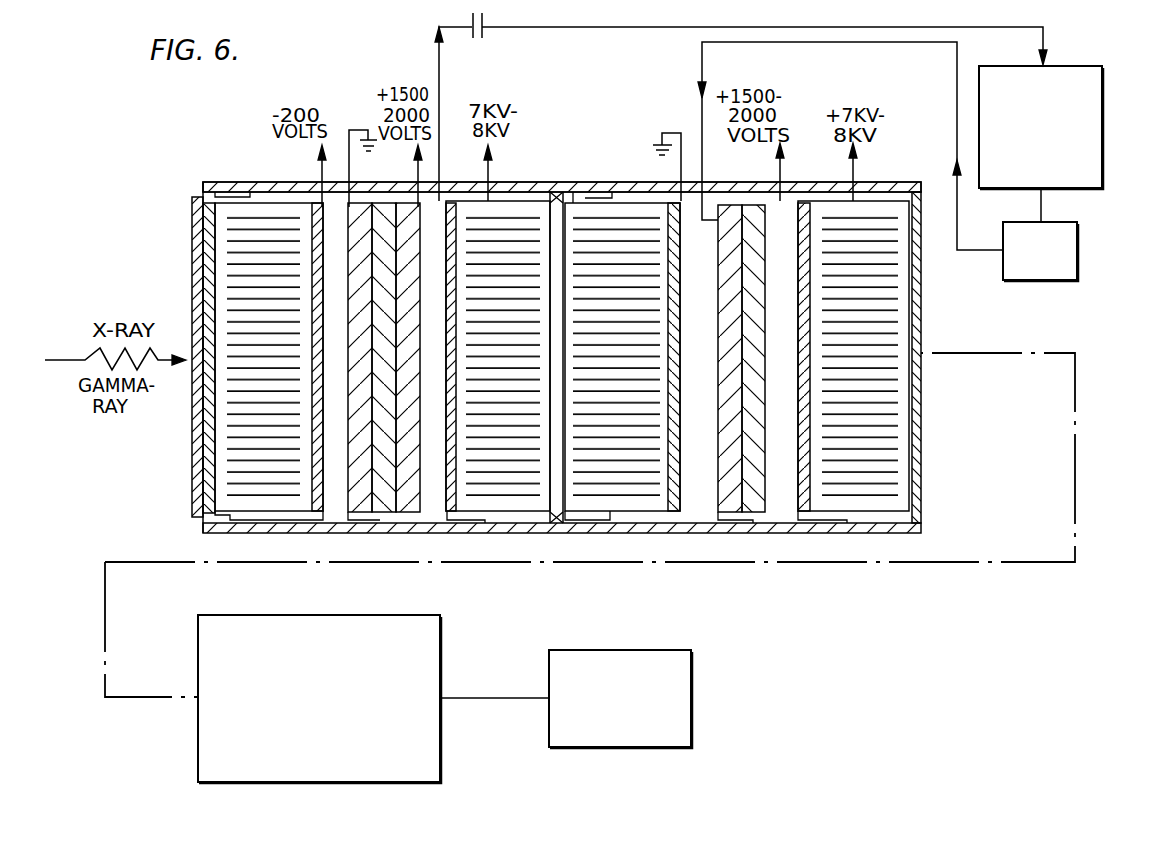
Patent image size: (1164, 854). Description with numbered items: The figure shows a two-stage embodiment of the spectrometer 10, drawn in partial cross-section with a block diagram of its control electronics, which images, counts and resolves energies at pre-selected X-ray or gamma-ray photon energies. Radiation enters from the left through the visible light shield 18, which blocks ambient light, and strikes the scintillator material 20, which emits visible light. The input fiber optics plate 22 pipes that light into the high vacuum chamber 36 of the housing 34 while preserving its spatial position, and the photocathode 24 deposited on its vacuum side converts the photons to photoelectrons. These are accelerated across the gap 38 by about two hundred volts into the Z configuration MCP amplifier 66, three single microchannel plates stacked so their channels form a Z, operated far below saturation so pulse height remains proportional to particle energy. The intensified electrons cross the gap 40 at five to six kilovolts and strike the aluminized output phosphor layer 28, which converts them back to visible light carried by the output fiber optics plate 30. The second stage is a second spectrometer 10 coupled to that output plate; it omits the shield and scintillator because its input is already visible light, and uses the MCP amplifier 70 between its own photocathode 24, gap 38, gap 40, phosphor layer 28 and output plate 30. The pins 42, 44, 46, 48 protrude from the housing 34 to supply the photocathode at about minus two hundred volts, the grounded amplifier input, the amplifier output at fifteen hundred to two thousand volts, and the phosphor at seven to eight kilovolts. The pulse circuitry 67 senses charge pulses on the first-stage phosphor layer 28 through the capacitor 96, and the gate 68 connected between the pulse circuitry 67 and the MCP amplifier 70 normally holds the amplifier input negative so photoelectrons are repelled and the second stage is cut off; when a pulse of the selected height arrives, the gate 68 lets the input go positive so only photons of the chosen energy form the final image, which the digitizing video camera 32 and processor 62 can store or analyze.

The spectrometer 10 is at (100, 196).
The visible light shield 18 is at (192, 245).
The scintillator material 20 is at (210, 288).
The input fiber optics plate 22 is at (242, 208).
The photocathode 24 is at (323, 497).
The aluminized output phosphor layer 28 is at (447, 498).
The output fiber optics plate 30 is at (505, 507).
The digitizing video camera 32 is at (440, 753).
The housing 34 is at (257, 181).
The high vacuum chamber 36 is at (337, 508).
The gap 38 is at (347, 441).
The gap 40 is at (443, 441).
The pin 42 is at (320, 172).
The pin 44 is at (356, 176).
The pin 46 is at (423, 176).
The pin 48 is at (490, 176).
The processor 62 is at (605, 747).
The Z configuration MCP amplifier 66 is at (380, 500).
The pulse circuitry 67 is at (1103, 138).
The gate 68 is at (1078, 246).
The MCP amplifier 70 is at (766, 262).
The capacitor 96 is at (478, 38).